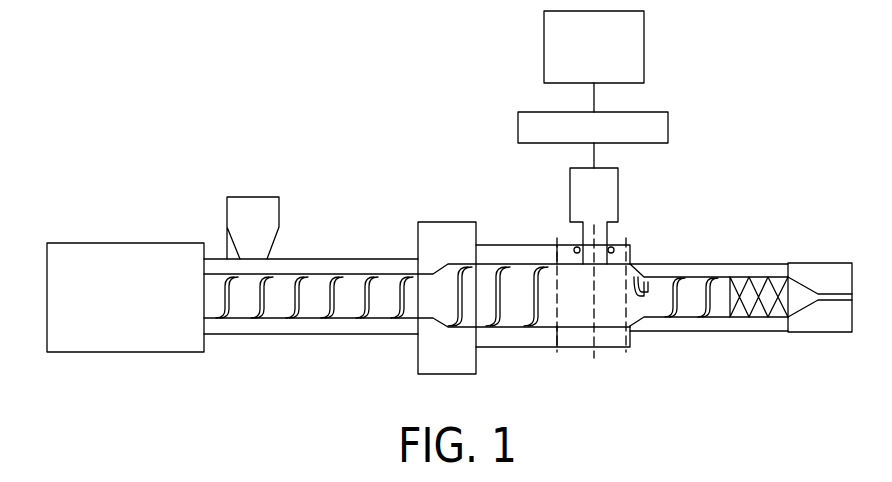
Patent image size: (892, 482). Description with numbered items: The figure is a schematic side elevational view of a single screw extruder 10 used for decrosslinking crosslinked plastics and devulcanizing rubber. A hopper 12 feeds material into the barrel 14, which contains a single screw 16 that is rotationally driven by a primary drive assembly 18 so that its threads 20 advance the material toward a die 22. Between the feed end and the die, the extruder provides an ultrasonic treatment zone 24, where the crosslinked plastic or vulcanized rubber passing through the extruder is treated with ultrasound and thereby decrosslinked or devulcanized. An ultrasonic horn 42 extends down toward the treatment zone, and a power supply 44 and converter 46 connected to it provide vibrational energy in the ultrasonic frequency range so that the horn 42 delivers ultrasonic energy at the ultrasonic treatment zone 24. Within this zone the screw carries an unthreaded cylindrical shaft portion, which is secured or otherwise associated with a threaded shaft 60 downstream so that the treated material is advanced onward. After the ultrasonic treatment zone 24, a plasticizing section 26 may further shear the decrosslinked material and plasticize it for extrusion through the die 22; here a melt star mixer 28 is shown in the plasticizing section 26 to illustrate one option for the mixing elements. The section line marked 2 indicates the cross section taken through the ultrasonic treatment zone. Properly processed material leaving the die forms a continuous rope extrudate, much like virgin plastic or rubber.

The single screw extruder 10 is at (120, 175).
The hopper 12 is at (260, 207).
The barrel 14 is at (358, 258).
The single screw 16 is at (340, 302).
The primary drive assembly 18 is at (137, 330).
The threads 20 is at (266, 302).
The die 22 is at (818, 272).
The ultrasonic treatment zone 24 is at (629, 360).
The plasticizing section 26 is at (673, 268).
The melt star mixer 28 is at (762, 310).
The ultrasonic horn 42 is at (583, 238).
The power supply 44 is at (644, 50).
The converter 46 is at (668, 127).
The threaded shaft 60 is at (687, 303).
The section line 2- 2 is at (626, 354).